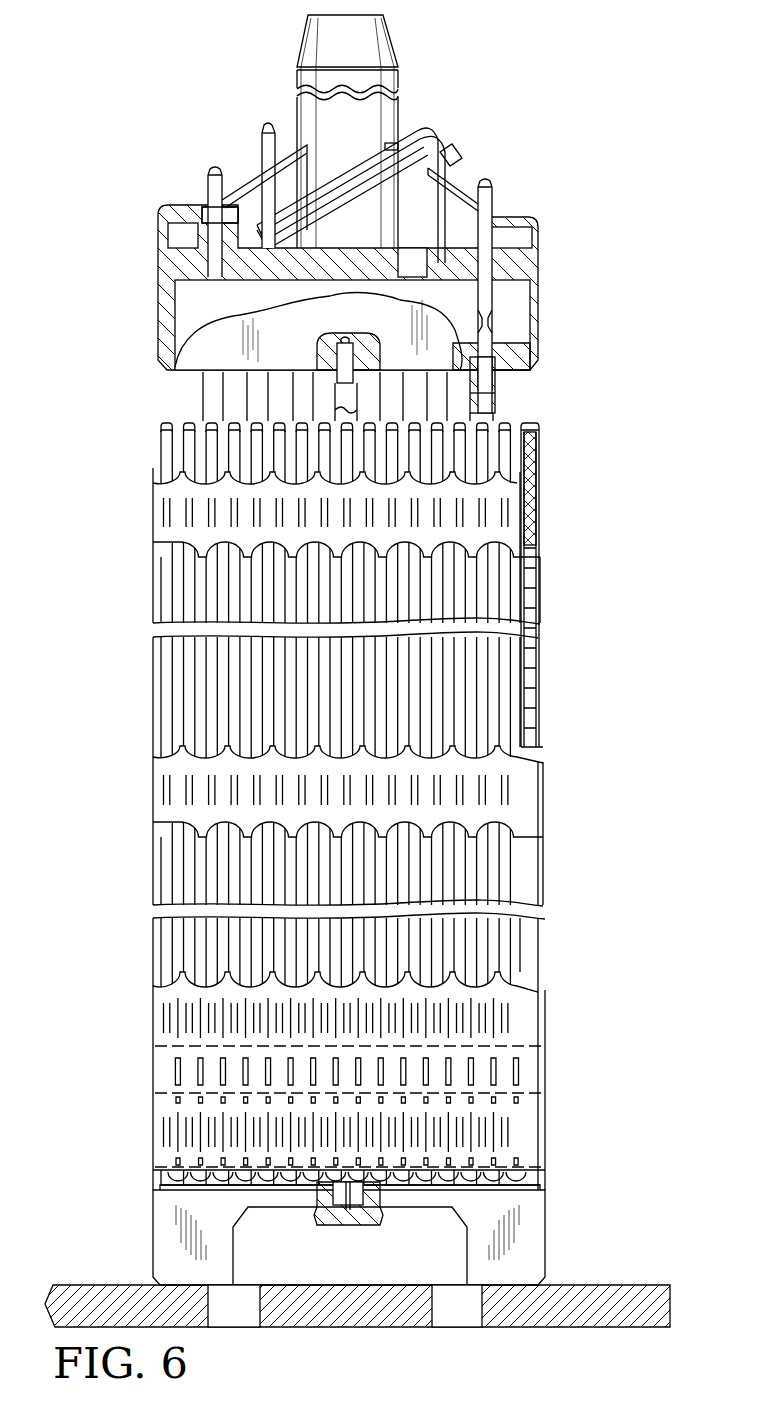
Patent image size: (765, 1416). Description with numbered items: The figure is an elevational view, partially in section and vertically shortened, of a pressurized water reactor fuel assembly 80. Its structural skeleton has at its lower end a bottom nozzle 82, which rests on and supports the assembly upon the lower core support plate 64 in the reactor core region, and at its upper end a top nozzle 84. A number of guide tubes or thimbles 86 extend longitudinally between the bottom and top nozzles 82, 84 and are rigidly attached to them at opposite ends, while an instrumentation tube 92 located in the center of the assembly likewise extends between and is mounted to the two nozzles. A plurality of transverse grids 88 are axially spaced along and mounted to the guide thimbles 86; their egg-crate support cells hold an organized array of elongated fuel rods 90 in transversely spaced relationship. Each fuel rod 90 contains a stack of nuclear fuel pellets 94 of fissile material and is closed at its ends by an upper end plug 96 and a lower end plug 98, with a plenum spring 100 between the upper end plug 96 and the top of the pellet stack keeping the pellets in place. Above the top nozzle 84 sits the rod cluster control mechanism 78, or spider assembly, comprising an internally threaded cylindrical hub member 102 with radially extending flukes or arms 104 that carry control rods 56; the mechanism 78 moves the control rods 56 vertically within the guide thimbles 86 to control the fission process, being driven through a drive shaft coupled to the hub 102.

The control rods 56 is at (497, 333).
The lower core support plate 64 is at (596, 1289).
The rod cluster control mechanism 78 is at (443, 128).
The fuel assembly 80 is at (628, 287).
The bottom nozzle 82 is at (548, 1233).
The top nozzle 84 is at (543, 258).
The guide tubes or thimbles 86 is at (203, 400).
The transverse grids 88 is at (153, 522).
The fuel rods 90 is at (153, 690).
The instrumentation tube 92 is at (350, 1226).
The nuclear fuel pellets 94 is at (541, 598).
The upper end plug 96 is at (541, 437).
The lower end plug 98 is at (548, 1165).
The plenum spring 100 is at (541, 492).
The cylindrical hub member 102 is at (397, 118).
The flukes or arms 104 is at (262, 152).